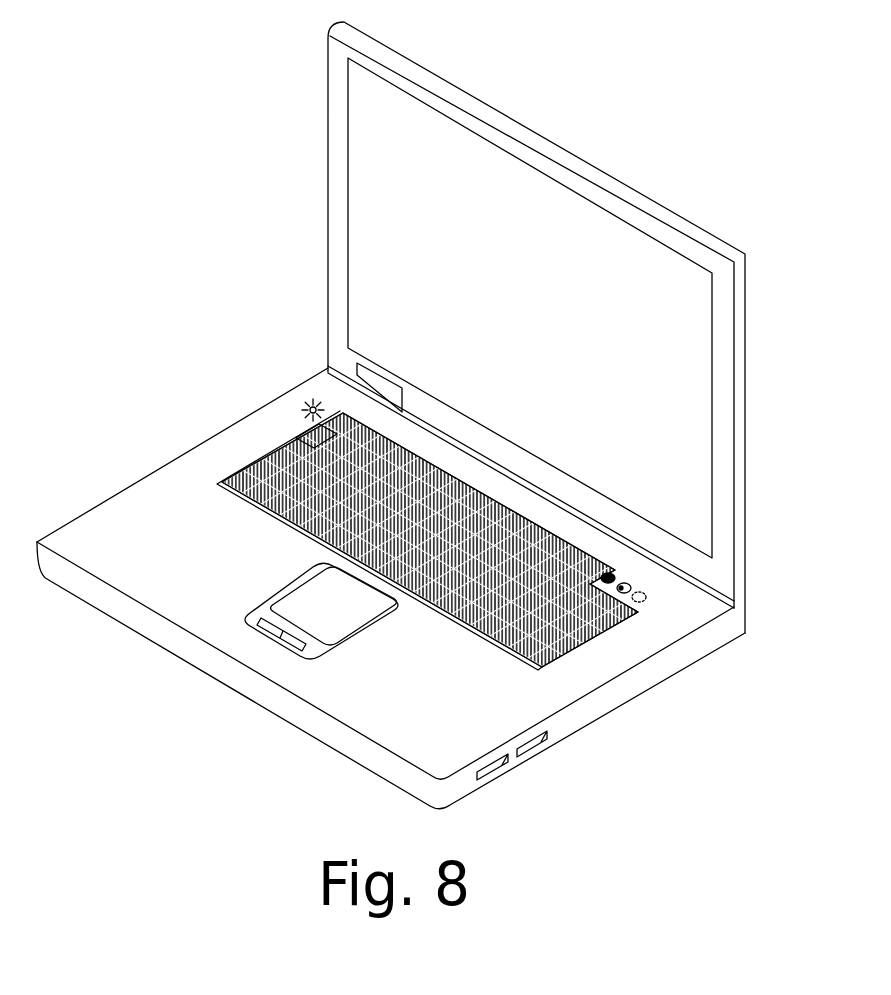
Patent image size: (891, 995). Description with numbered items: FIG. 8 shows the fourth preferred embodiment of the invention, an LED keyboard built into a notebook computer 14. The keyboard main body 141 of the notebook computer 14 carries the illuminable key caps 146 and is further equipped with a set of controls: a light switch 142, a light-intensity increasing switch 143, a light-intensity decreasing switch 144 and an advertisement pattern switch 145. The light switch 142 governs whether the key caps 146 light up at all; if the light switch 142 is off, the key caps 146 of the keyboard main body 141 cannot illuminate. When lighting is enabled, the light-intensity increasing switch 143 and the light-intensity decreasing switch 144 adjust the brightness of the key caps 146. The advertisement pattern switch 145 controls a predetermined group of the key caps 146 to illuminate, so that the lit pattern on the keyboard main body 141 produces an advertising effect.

The notebook computer 14 is at (563, 147).
The keyboard main body 141 is at (283, 453).
The light switch 142 is at (647, 597).
The light-intensity increasing switch 143 is at (631, 586).
The light-intensity decreasing switch 144 is at (614, 575).
The advertisement pattern switch 145 is at (311, 404).
The key caps 146 is at (307, 432).